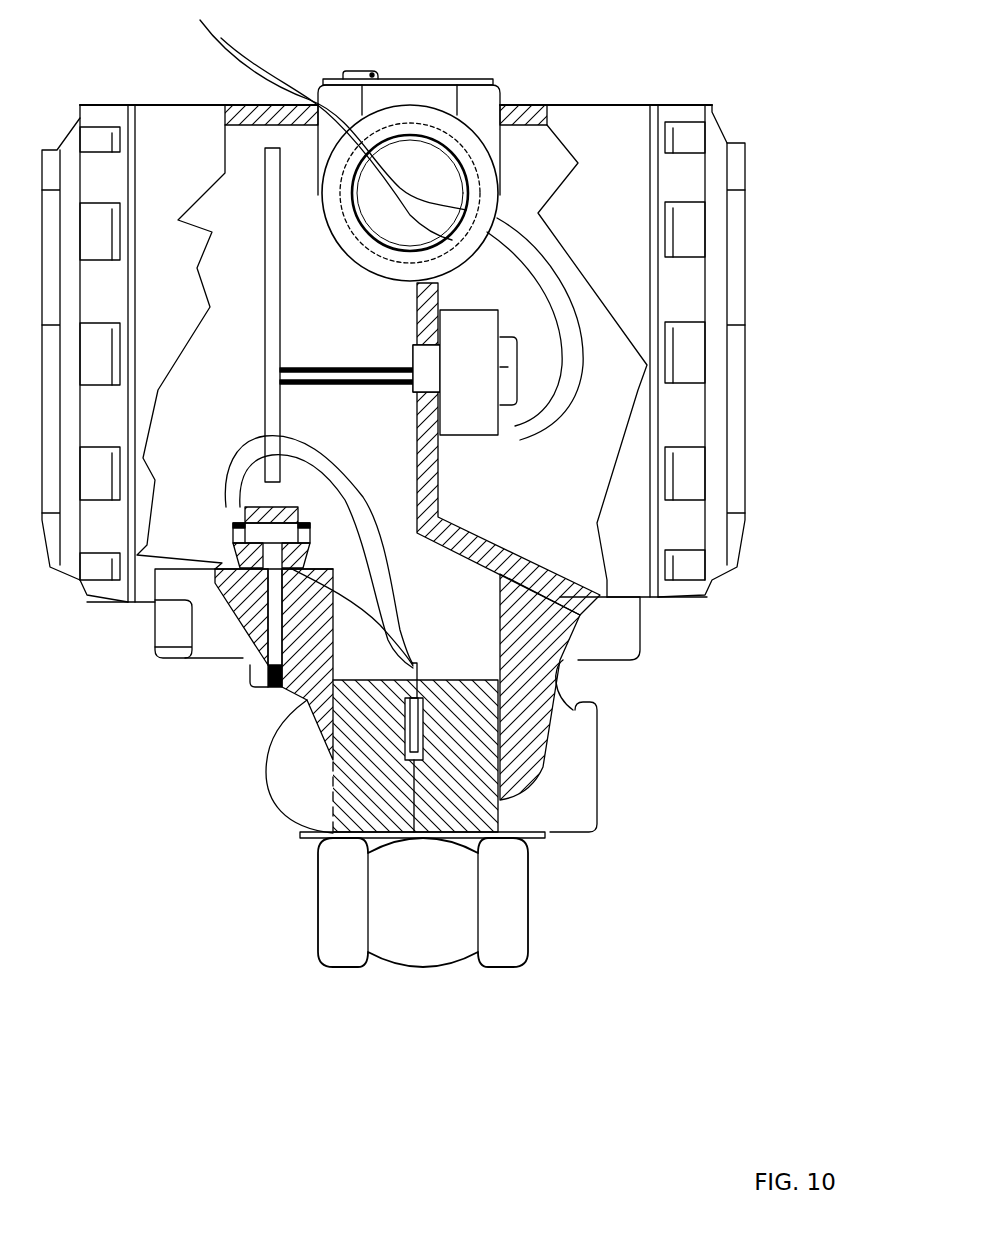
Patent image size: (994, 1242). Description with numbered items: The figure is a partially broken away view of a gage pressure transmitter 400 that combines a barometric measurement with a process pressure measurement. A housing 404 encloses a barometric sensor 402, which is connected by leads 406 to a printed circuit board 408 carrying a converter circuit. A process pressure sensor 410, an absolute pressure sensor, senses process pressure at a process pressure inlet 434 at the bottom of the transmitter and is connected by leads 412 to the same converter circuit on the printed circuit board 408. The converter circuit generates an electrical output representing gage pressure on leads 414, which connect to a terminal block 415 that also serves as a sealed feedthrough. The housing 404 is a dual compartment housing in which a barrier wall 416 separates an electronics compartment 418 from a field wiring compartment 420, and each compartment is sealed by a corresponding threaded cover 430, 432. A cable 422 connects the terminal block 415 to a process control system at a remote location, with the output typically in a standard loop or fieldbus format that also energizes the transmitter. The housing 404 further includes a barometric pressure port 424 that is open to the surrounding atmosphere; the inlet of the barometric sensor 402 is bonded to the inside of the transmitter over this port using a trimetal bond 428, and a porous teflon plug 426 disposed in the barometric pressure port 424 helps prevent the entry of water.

The gage pressure transmitter 400 is at (753, 110).
The barometric sensor 402 is at (232, 545).
The housing 404 is at (213, 660).
The leads 406 is at (236, 456).
The printed circuit board 408 is at (277, 292).
The process pressure sensor 410 is at (427, 722).
The leads 412 is at (330, 438).
The leads 414 is at (322, 368).
The terminal block 415 is at (463, 435).
The barrier wall 416 is at (440, 497).
The electronics compartment 418 is at (195, 392).
The field wiring compartment 420 is at (569, 459).
The cable 422 is at (232, 58).
The barometric pressure port 424 is at (252, 672).
The porous teflon plug 426 is at (273, 623).
The trimetal bond 428 is at (370, 605).
The threaded cover 430 is at (68, 125).
The threaded cover 432 is at (712, 122).
The process pressure inlet 434 is at (423, 973).